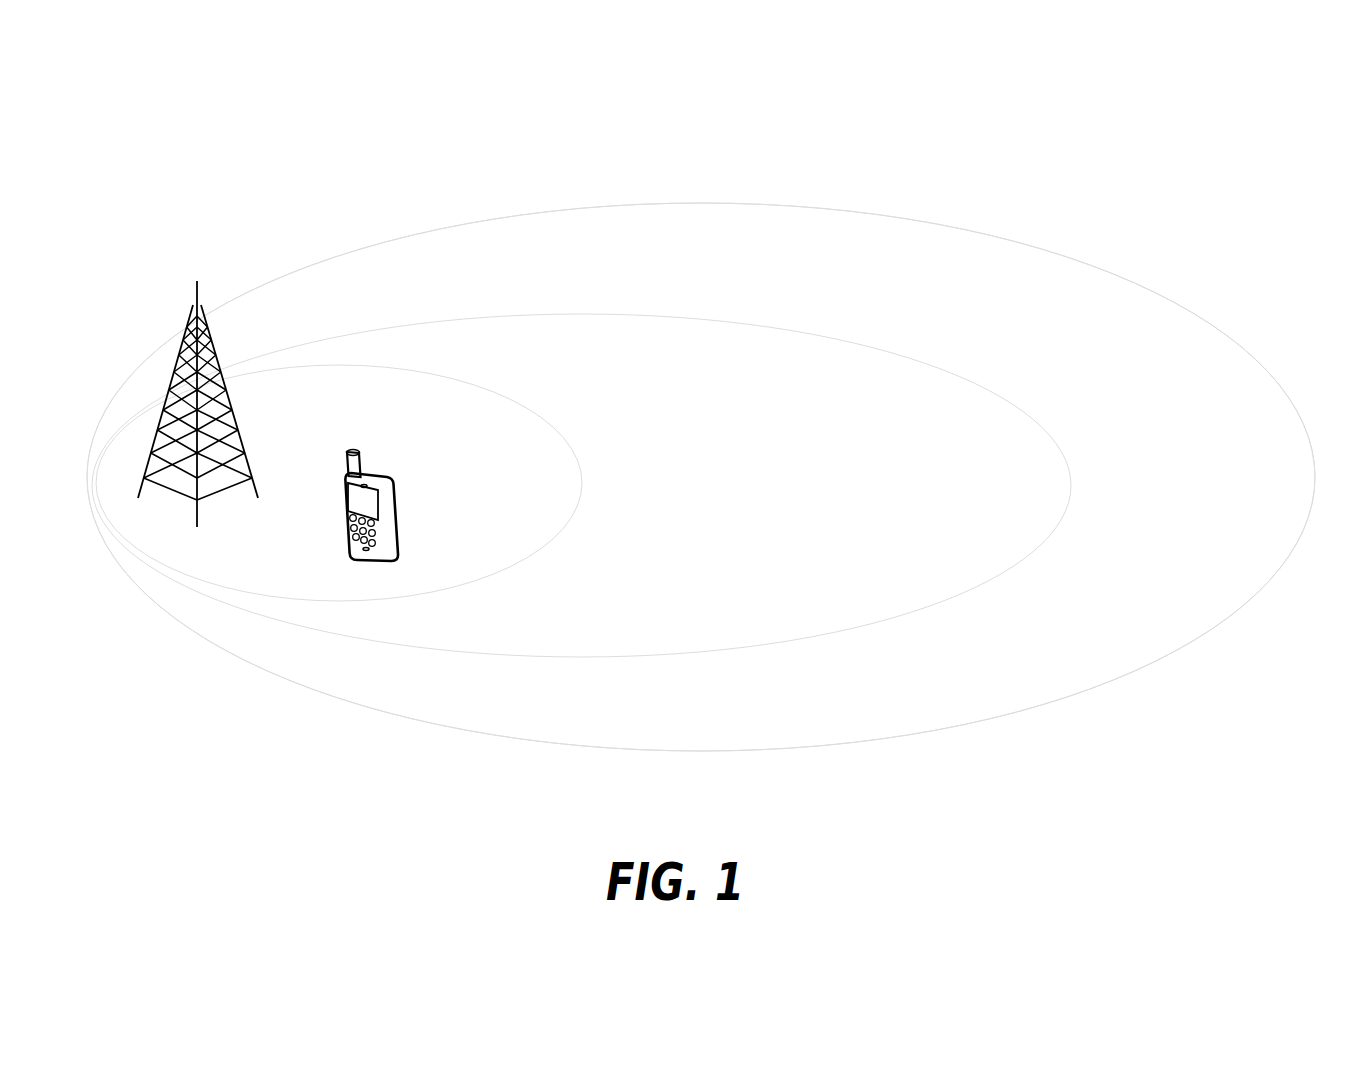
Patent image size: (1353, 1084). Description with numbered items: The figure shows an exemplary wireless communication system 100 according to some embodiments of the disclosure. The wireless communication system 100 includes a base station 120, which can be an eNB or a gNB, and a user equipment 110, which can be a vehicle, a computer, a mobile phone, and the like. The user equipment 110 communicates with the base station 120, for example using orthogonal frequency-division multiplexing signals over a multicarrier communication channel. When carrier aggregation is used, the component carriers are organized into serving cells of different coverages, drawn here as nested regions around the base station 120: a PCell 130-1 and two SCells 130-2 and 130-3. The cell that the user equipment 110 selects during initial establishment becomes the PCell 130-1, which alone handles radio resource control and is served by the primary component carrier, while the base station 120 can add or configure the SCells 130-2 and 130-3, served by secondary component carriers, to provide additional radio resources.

The wireless communication system 100 is at (1128, 197).
The user equipment 110 is at (377, 465).
The base station 120 is at (198, 262).
The primary serving cell 130-1 is at (753, 203).
The secondary serving cell 130-2 is at (658, 316).
The secondary serving cell 130-3 is at (537, 412).